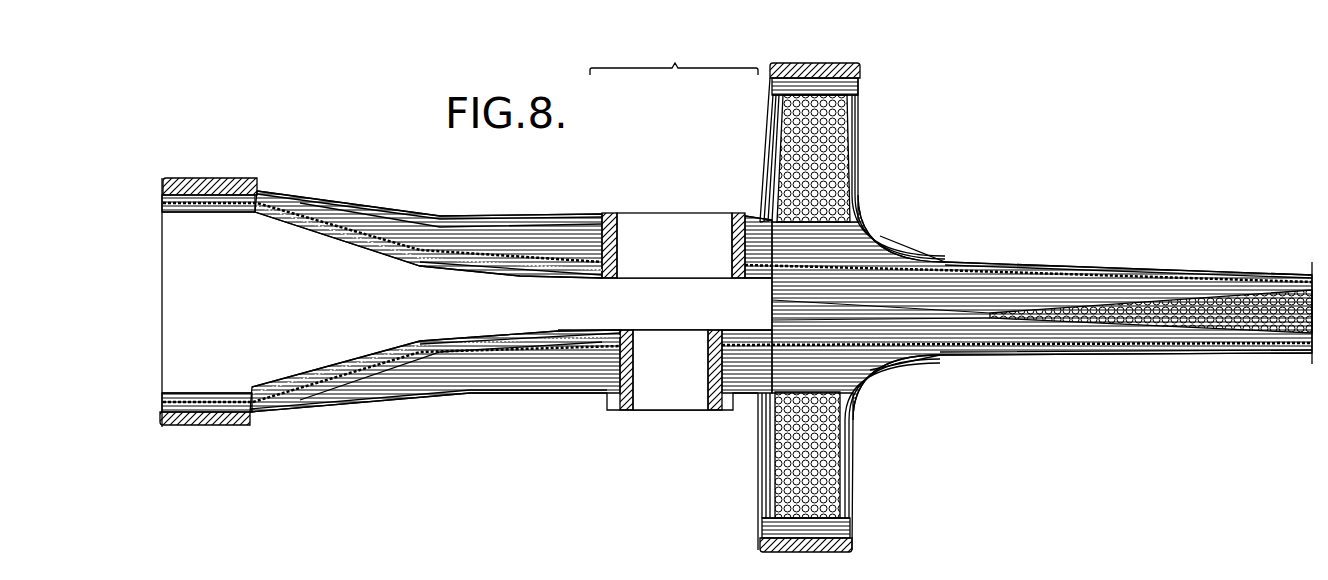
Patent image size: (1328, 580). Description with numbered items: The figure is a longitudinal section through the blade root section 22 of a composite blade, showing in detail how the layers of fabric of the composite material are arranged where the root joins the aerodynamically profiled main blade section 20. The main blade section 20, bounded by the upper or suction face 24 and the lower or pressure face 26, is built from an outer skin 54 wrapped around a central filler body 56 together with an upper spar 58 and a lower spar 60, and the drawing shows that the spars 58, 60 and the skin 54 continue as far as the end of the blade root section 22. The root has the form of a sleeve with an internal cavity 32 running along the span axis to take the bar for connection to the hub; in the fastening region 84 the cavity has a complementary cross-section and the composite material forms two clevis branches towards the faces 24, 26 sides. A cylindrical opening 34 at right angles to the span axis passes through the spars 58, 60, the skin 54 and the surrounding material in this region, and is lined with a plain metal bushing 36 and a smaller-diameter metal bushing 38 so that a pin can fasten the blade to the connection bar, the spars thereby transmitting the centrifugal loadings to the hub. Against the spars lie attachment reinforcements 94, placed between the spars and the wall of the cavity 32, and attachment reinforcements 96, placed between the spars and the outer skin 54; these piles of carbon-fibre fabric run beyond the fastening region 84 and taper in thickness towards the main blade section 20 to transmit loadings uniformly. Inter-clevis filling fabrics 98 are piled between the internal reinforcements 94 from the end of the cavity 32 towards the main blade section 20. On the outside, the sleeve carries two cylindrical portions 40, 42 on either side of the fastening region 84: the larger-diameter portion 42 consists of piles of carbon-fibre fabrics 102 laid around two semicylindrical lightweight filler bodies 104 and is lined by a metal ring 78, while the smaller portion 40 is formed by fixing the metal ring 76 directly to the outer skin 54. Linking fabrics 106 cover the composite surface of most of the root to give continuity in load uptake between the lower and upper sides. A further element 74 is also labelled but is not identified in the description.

The main blade section 20 is at (1245, 405).
The blade root section 22 is at (485, 468).
The upper face 24 is at (1247, 275).
The lower face 26 is at (1278, 357).
The internal cavity 32 is at (352, 345).
The cylindrical opening 34 is at (688, 240).
The metal bushing 36 is at (612, 240).
The metal bushing 38 is at (630, 385).
The cylindrical portion 40 is at (205, 180).
The cylindrical portion 42 is at (785, 64).
The outer skin 54 is at (340, 202).
The central filler body 56 is at (1205, 337).
The upper spar 58 is at (303, 222).
The lower spar 60 is at (313, 387).
The base portion 74 is at (503, 577).
The metal ring 76 is at (193, 420).
The metal ring 78 is at (787, 552).
The fastening region 84 is at (724, 129).
The attachment reinforcements 94 is at (458, 265).
The attachment reinforcements 96 is at (580, 225).
The inter-clevis filling fabrics 98 is at (770, 304).
The carbon-fibre fabrics 102 is at (860, 78).
The filler bodies 104 is at (843, 188).
The linking fabrics 106 is at (500, 213).